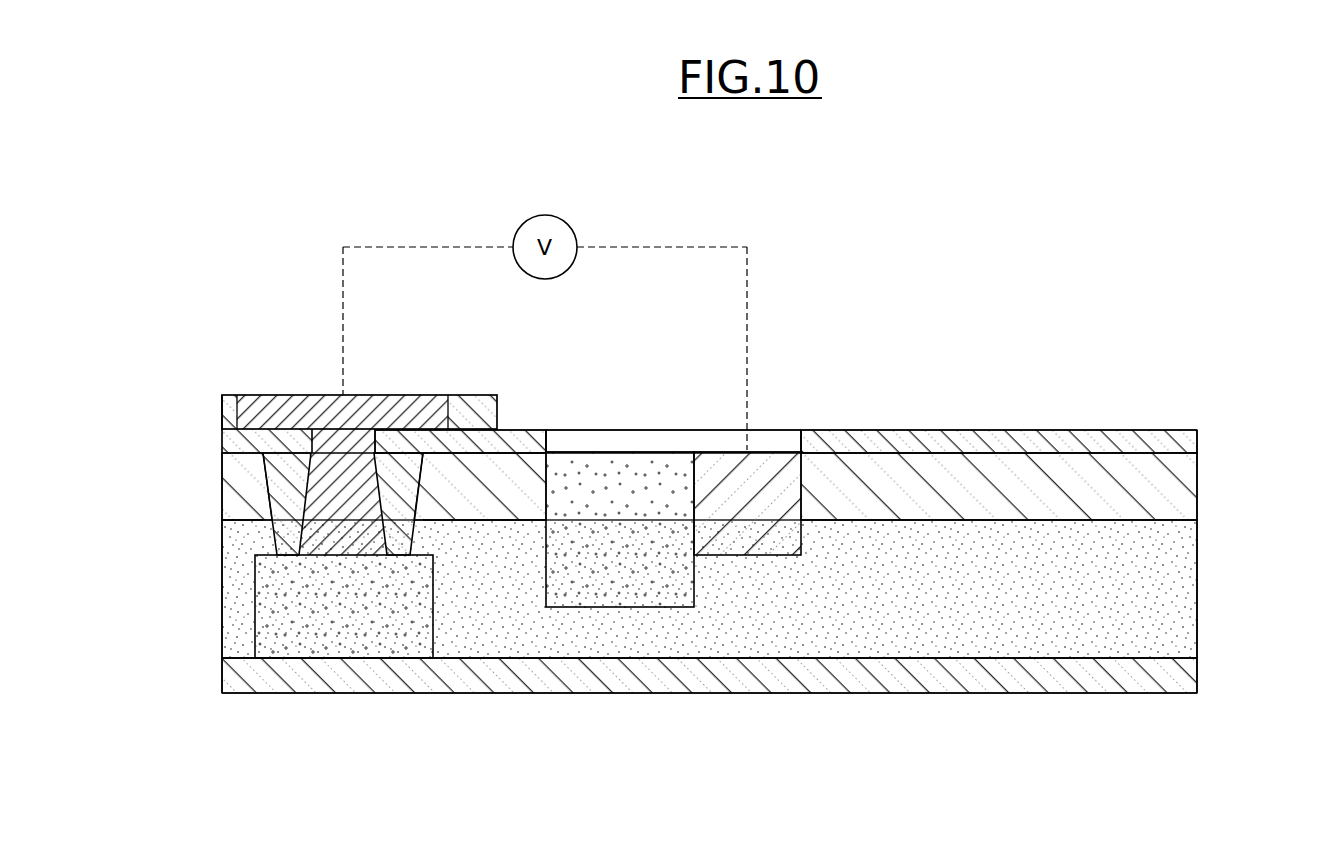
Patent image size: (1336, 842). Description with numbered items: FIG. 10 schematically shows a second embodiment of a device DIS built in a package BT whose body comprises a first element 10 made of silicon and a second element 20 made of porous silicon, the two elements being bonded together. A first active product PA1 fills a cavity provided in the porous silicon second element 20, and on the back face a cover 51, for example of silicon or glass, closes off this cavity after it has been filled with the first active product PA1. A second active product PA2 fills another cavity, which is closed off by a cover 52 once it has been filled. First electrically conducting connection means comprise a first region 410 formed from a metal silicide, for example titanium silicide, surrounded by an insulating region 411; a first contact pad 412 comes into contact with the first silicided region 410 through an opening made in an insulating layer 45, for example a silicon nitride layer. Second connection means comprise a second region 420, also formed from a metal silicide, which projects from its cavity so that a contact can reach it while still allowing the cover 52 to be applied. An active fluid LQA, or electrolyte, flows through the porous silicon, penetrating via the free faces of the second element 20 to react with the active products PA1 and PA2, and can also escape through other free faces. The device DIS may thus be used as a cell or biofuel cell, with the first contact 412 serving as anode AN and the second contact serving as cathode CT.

The first element 10 is at (1197, 481).
The second element 20 is at (1197, 588).
The insulating layer 45 is at (946, 440).
The cover 51 is at (463, 686).
The cover 52 is at (652, 445).
The first region 410 is at (366, 465).
The insulating region 411 is at (290, 460).
The first contact pad 412 is at (418, 413).
The second region 420 is at (788, 465).
The first active product PA1 is at (330, 602).
The second active product PA2 is at (596, 468).
The anode AN is at (311, 358).
The cathode CT is at (715, 390).
The package BT is at (1202, 376).
The device DIS is at (1238, 425).
The active fluid LQA is at (255, 608).